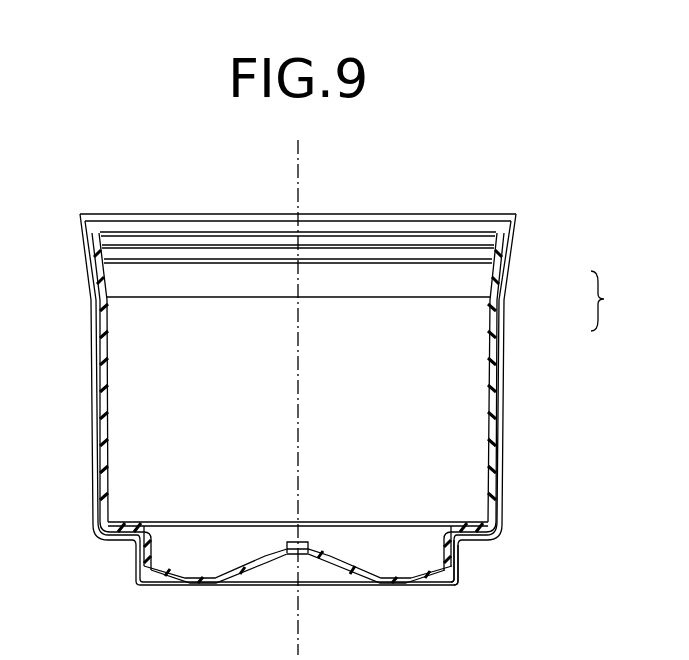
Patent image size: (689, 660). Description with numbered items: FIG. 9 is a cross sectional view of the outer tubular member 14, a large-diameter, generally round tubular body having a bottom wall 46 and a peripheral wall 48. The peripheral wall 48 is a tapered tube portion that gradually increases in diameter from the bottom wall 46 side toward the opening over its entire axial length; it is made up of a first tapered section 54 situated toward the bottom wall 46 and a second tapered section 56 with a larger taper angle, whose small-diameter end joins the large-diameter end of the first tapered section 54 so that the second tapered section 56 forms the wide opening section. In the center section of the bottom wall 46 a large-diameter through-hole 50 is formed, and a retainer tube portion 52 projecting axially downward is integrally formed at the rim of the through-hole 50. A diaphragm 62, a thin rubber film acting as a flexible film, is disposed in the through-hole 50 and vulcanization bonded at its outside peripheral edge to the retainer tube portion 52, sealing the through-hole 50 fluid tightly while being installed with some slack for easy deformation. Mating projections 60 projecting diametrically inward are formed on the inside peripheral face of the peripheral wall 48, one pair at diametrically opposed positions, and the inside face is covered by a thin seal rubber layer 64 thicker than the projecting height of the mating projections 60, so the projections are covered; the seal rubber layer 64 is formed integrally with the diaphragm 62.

The outer tubular member 14 is at (78, 210).
The bottom wall 46 is at (468, 536).
The peripheral wall 48 is at (611, 301).
The large-diameter through-hole 50 is at (167, 573).
The retainer tube portion 52 is at (423, 576).
The first tapered section 54 is at (504, 318).
The second tapered section 56 is at (505, 276).
The mating projections 60 is at (93, 284).
The diaphragm 62 is at (352, 585).
The seal rubber layer 64 is at (100, 341).